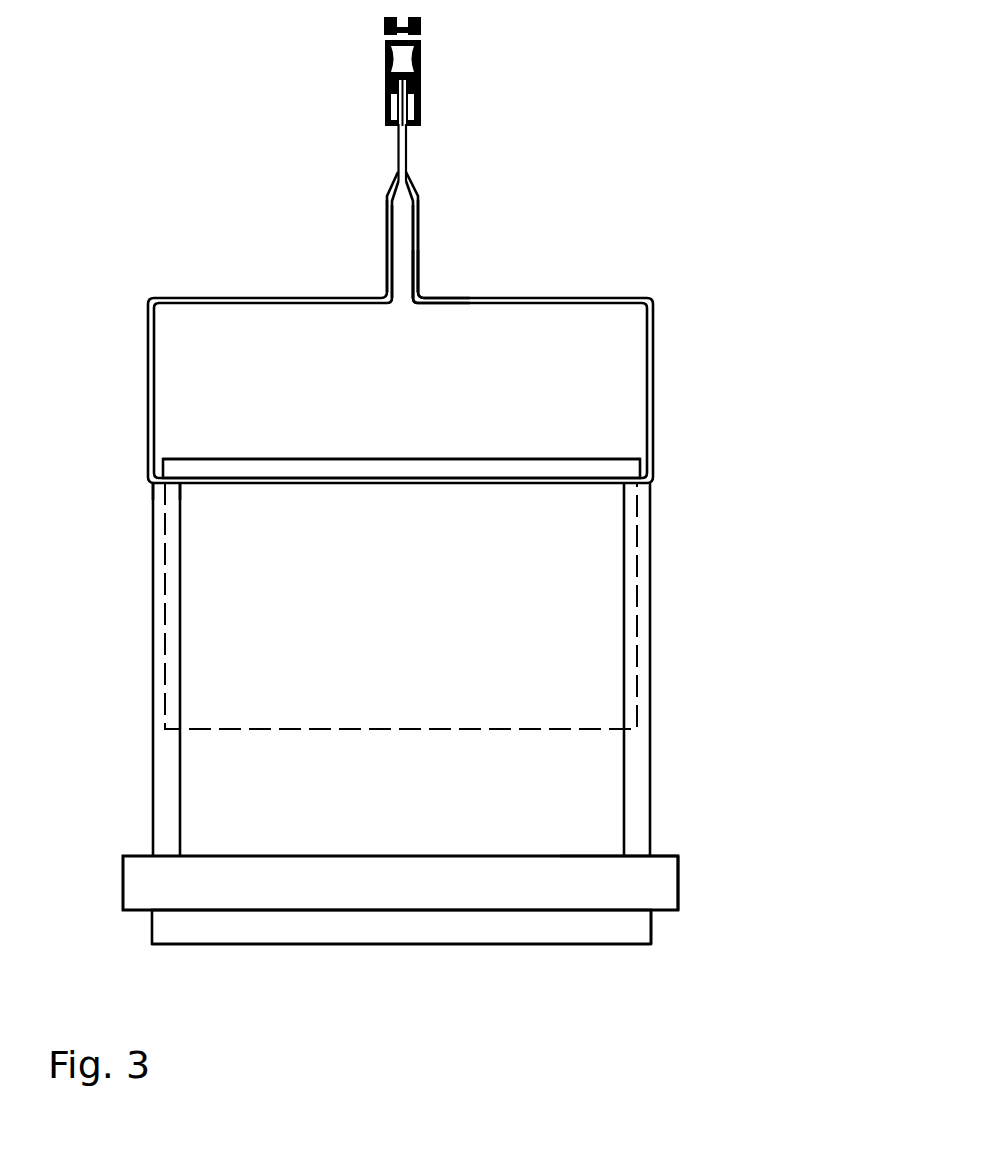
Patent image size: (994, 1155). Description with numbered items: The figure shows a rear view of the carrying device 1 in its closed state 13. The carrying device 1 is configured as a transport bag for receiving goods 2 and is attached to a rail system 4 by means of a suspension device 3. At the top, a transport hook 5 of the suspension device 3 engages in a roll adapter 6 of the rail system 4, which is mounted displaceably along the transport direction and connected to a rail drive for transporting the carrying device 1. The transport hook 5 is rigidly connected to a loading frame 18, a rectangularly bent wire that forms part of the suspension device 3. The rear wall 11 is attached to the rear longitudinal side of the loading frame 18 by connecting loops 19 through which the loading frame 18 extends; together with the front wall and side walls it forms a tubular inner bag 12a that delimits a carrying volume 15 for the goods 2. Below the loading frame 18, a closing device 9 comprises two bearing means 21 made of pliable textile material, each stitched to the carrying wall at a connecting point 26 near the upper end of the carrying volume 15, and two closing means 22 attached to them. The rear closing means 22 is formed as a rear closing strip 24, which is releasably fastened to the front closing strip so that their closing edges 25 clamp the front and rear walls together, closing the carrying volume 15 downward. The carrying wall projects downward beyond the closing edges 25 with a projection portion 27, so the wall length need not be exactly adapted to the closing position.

The carrying device 1 is at (157, 266).
The goods 2 is at (609, 467).
The suspension device 3 is at (442, 291).
The rail system 4 is at (417, 58).
The transport hook 5 is at (418, 205).
The roll adapter 6 is at (405, 133).
The closing device 9 is at (694, 896).
The rear wall 11 is at (163, 806).
The inner bag 12a is at (170, 926).
The closed state 13 is at (696, 929).
The carrying volume 15 is at (281, 428).
The loading frame 18 is at (152, 333).
The connecting loops 19 is at (247, 483).
The bearing means 21 is at (180, 613).
The closing means 22 is at (665, 862).
The rear closing strip 24 is at (458, 876).
The closing edge 25 is at (568, 853).
The connecting point 26 is at (183, 487).
The projection portion 27 is at (545, 928).